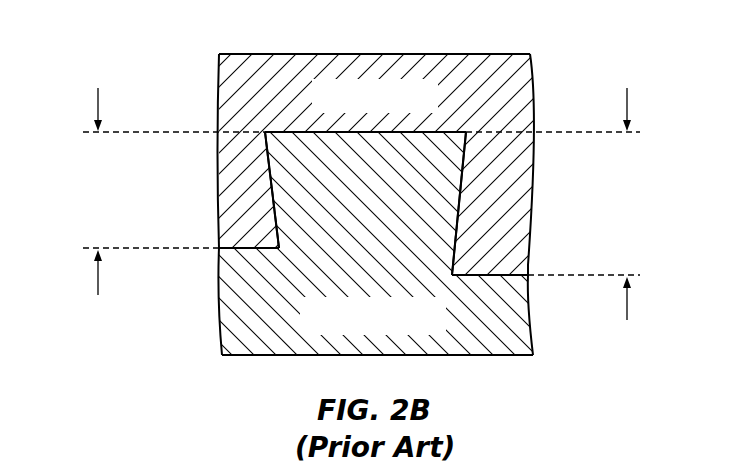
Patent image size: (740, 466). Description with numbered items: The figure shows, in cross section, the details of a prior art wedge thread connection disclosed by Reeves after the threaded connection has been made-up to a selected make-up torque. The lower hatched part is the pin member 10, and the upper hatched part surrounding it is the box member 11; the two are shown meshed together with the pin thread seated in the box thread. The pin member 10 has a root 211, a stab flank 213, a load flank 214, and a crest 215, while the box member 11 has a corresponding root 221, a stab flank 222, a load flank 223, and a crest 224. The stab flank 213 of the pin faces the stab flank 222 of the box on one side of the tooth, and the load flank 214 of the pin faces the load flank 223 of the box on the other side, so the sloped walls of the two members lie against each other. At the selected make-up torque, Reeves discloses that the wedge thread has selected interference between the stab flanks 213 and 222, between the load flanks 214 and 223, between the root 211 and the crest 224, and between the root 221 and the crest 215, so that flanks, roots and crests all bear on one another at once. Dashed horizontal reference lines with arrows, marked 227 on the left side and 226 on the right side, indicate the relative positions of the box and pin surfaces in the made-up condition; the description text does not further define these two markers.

The pin member 10 is at (497, 355).
The box member 11 is at (498, 54).
The root 211 is at (236, 261).
The stab flank 213 is at (462, 226).
The load flank 214 is at (274, 204).
The crest 215 is at (303, 132).
The root 221 is at (462, 123).
The stab flank 222 is at (470, 201).
The load flank 223 is at (264, 178).
The crest 224 is at (236, 240).
The right displacement indicator 226 is at (627, 104).
The left displacement indicator 227 is at (98, 100).